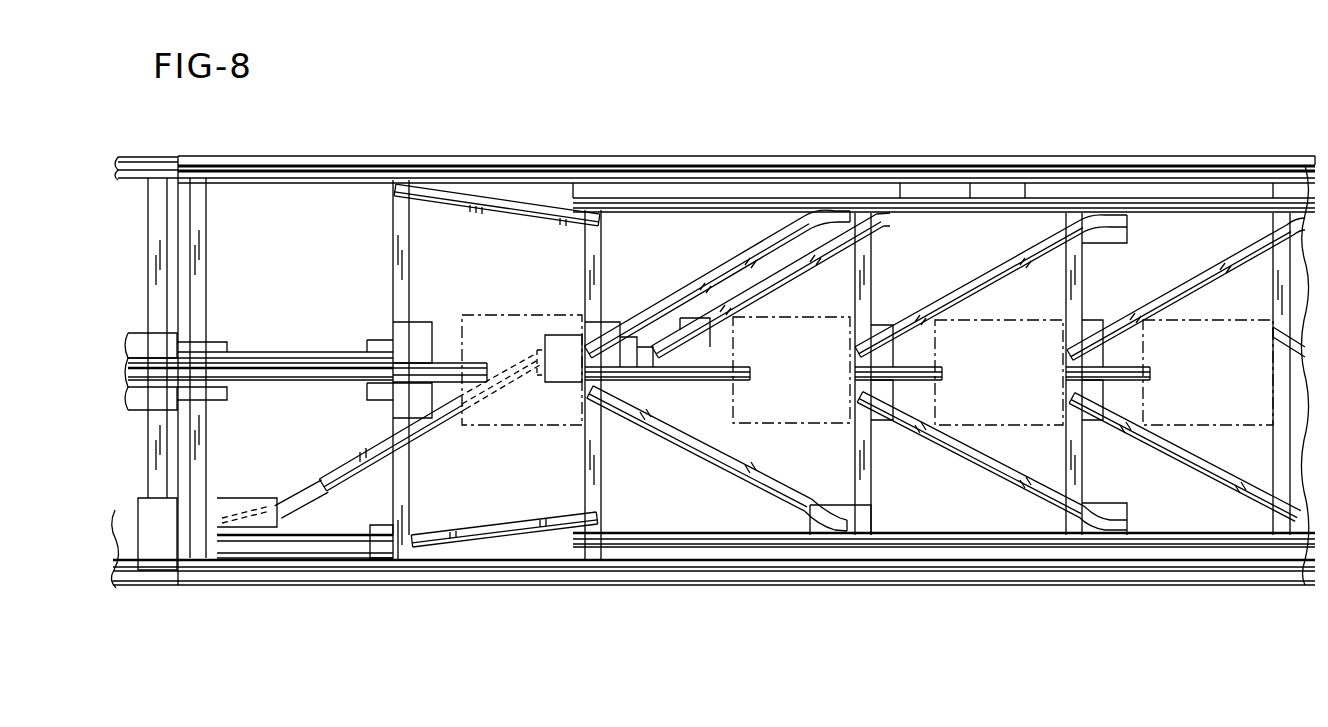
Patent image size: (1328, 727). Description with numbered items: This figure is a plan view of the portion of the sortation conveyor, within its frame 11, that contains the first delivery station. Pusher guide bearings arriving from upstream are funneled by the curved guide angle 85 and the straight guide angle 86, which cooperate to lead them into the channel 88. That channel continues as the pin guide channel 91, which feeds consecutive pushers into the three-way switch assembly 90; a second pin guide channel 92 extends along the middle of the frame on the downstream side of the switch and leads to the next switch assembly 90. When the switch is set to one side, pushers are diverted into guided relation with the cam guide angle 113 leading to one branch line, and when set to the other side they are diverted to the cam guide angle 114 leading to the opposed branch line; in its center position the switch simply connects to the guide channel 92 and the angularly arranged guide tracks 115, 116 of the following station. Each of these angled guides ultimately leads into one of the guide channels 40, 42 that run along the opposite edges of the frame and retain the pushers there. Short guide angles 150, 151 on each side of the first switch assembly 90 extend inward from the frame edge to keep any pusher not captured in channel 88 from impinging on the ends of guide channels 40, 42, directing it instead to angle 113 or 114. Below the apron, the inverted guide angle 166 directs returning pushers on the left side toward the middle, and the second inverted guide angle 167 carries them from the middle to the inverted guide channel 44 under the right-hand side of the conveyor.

The frame 11 is at (702, 147).
The guide channel 40 is at (1020, 197).
The guide channel 42 is at (966, 548).
The inverted guide channel 44 is at (273, 557).
The curved guide angle 85 is at (128, 334).
The straight guide angle 86 is at (128, 390).
The channel 88 is at (275, 365).
The switch assembly 90 is at (508, 316).
The pin guide channel 91 is at (441, 362).
The pin guide channel 92 is at (920, 362).
The cam guide angle 113 is at (700, 278).
The cam guide angle 114 is at (668, 448).
The angularly arranged guide track 115 is at (948, 295).
The angularly arranged guide track 116 is at (972, 466).
The short guide angle 150 is at (468, 212).
The short guide angle 151 is at (496, 523).
The inverted guide angle 166 is at (806, 268).
The inverted guide angle 167 is at (420, 437).